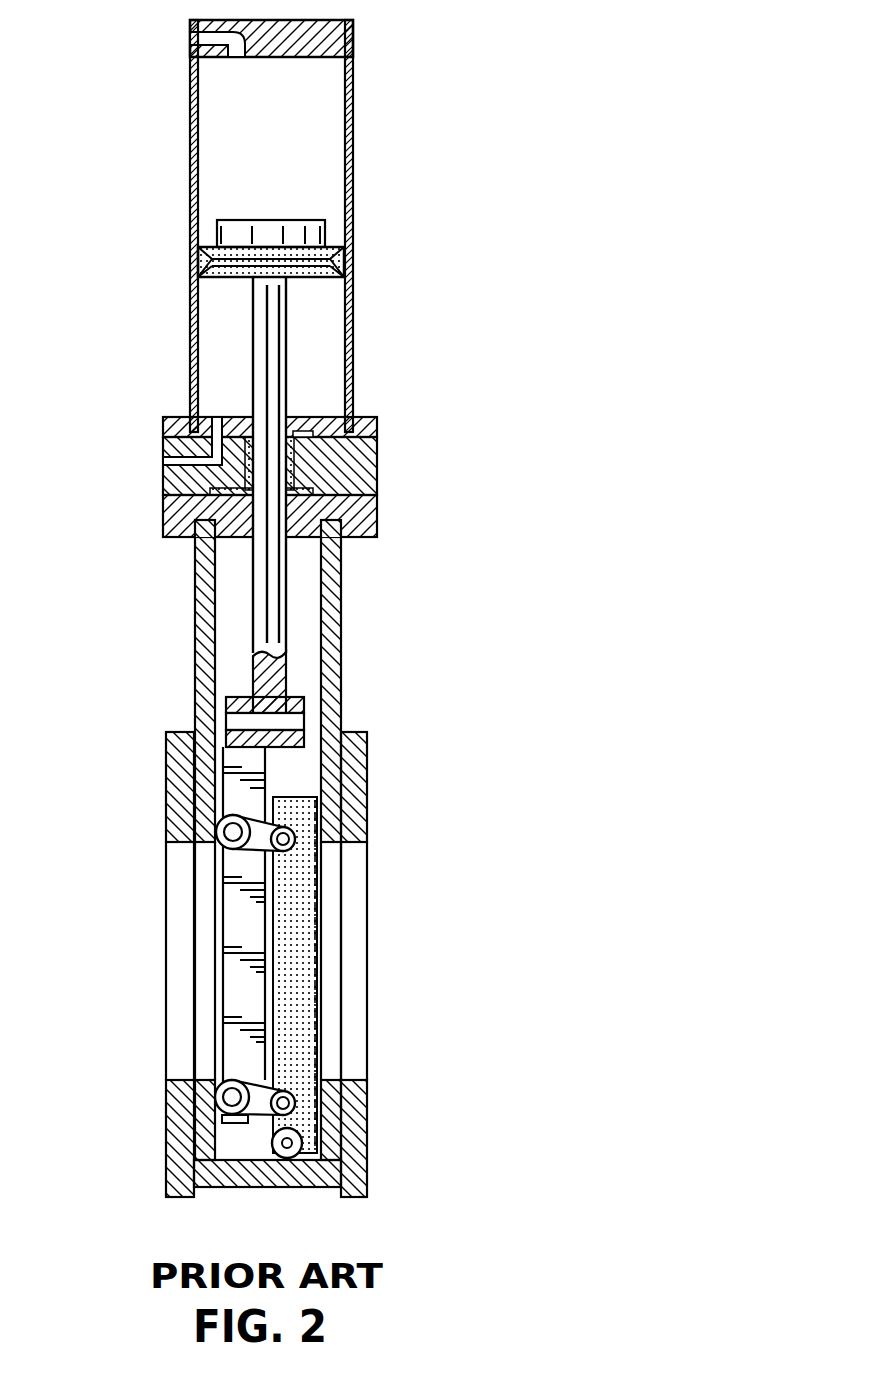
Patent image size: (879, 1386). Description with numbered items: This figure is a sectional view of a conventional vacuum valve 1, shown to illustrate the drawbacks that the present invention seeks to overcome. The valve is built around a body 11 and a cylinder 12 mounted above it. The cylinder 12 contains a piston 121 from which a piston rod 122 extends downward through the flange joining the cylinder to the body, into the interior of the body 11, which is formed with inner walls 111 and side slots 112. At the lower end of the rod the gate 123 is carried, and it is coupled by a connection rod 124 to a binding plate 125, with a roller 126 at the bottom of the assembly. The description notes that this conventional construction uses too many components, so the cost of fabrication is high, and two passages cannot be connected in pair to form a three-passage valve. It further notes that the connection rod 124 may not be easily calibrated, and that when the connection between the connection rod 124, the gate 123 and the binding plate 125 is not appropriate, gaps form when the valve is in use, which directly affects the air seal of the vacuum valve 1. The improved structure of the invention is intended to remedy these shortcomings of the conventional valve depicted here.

The vacuum valve 1 is at (363, 686).
The body 11 is at (348, 788).
The inner wall 111 is at (310, 634).
The slot 112 is at (352, 945).
The cylinder 12 is at (348, 382).
The piston 121 is at (345, 266).
The piston rod 122 is at (263, 612).
The gate 123 is at (232, 926).
The connection rod 124 is at (255, 842).
The binding plate 125 is at (297, 1020).
The roller 126 is at (287, 1158).